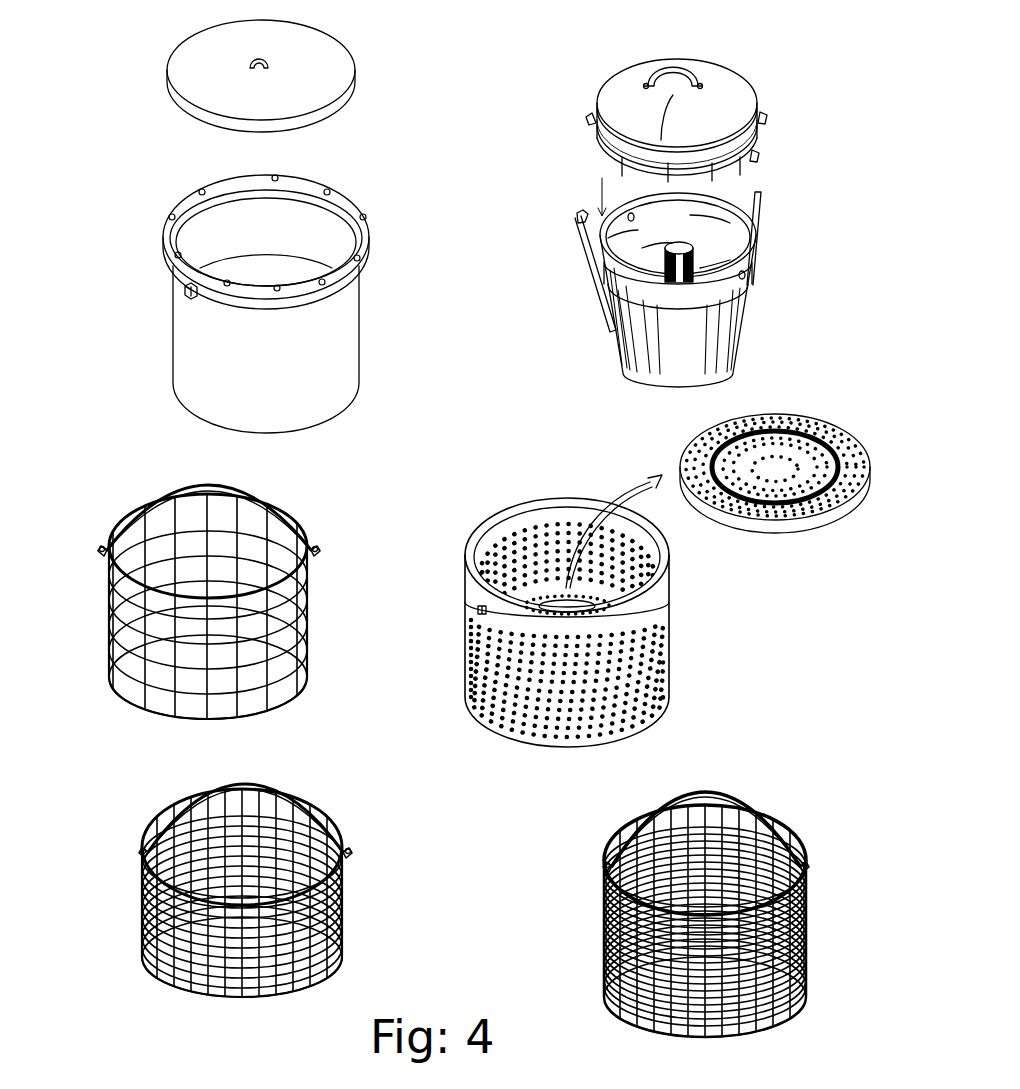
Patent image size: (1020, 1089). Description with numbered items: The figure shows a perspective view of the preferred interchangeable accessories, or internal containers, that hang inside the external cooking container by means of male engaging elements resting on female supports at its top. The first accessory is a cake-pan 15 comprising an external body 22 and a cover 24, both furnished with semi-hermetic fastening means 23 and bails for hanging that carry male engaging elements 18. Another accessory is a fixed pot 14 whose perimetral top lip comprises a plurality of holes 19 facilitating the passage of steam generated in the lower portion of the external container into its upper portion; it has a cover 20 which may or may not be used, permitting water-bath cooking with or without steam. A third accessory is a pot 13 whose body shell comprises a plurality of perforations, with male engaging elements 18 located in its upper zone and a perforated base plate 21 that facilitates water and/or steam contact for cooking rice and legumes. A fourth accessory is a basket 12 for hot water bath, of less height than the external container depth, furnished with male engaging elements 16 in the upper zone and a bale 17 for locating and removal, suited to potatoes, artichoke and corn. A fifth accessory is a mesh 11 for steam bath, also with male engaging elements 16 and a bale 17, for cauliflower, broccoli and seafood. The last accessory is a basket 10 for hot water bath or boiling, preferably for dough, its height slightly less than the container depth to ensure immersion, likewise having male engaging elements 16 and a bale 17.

The basket 10 is at (606, 931).
The mesh 11 is at (345, 918).
The basket 12 is at (308, 652).
The pot 13 is at (669, 618).
The fixed pot 14 is at (361, 336).
The cake-pan 15 is at (615, 340).
The male engaging elements 16 is at (362, 503).
The bale 17 is at (172, 488).
The male engaging elements 18 is at (184, 289).
The holes 19 is at (365, 220).
The cover 20 is at (355, 88).
The base plate 21 is at (823, 420).
The external body 22 is at (600, 268).
The semi-hermetic fastening means 23 is at (750, 270).
The cover 24 is at (617, 88).